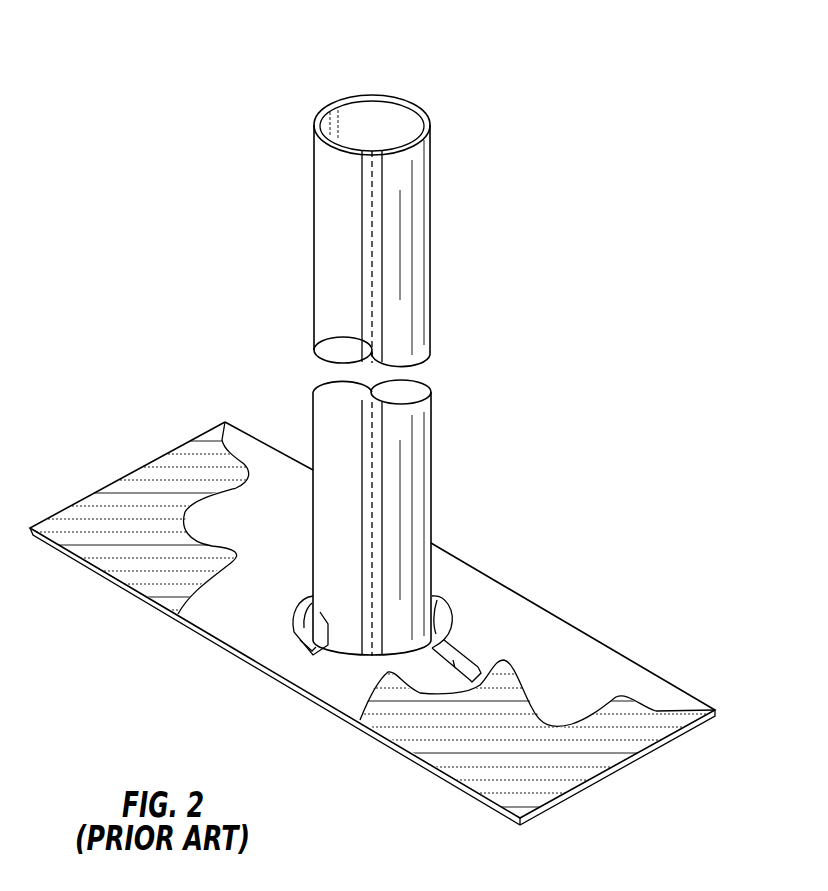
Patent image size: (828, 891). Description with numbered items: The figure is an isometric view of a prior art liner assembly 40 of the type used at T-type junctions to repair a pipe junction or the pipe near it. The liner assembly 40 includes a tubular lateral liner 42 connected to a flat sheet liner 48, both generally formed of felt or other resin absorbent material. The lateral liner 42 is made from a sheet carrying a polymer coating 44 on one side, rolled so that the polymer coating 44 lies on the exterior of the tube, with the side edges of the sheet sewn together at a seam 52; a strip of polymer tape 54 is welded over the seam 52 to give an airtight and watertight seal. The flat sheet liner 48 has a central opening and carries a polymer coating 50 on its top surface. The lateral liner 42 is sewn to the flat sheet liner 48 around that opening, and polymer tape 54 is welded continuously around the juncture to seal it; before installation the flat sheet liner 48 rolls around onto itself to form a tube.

The liner assembly 40 is at (570, 336).
The tubular lateral liner 42 is at (356, 112).
The polymer coating 44 is at (415, 201).
The flat sheet liner 48 is at (607, 768).
The polymer coating 50 is at (600, 662).
The seam 52 is at (382, 135).
The polymer tape 54 is at (376, 467).